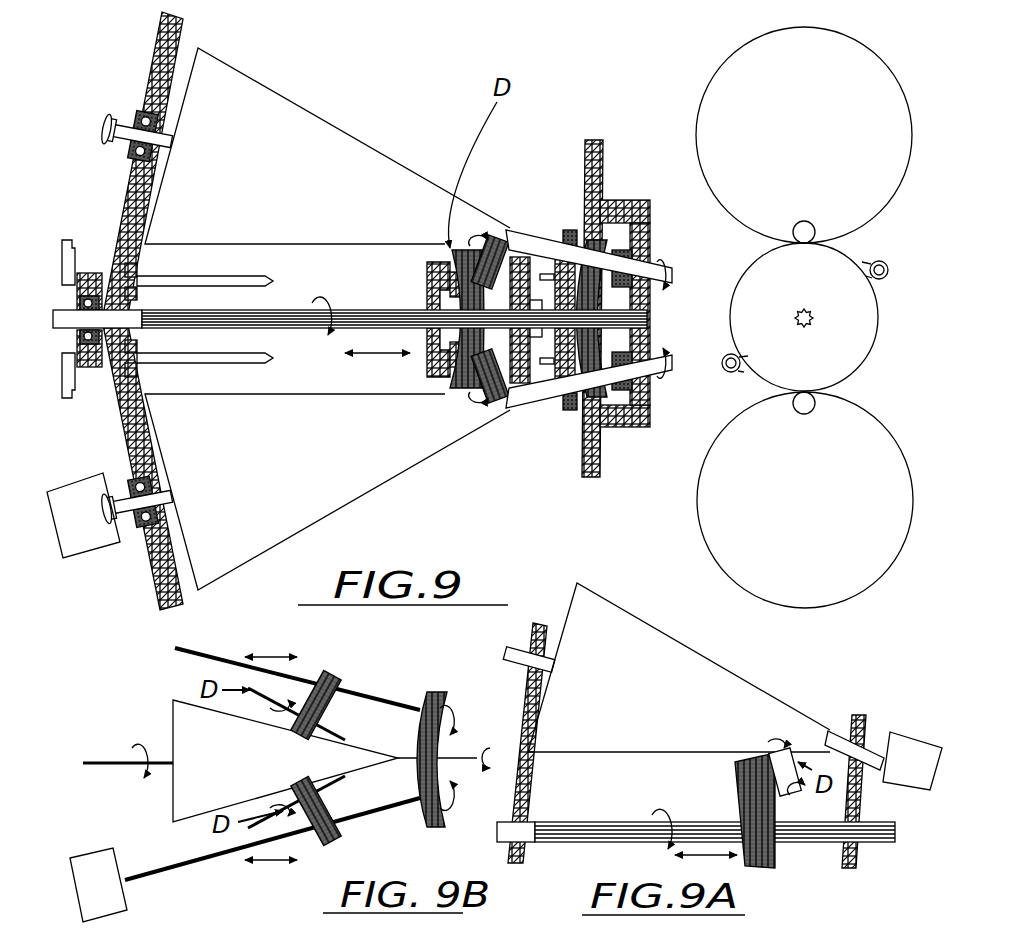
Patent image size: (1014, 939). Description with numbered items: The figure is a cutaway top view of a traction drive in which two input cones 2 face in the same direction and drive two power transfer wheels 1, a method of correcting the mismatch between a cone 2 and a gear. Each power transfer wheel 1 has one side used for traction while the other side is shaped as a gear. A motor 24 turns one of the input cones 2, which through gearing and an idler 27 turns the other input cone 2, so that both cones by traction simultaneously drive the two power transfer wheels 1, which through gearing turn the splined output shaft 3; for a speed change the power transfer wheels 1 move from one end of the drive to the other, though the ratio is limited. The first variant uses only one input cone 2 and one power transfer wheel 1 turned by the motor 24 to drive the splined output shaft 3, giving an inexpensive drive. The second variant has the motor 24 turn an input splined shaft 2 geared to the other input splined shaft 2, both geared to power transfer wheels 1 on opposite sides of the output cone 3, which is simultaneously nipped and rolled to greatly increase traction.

In FIG. 9, the power transfer wheel 1 is at (480, 235).
In FIG. 9B, the power transfer wheel 1 is at (330, 724).
In FIG. 9A, the power transfer wheel 1 is at (780, 767).
In FIG. 9, the input cone 2 is at (340, 152).
In FIG. 9B, the input cone 2 is at (355, 700).
In FIG. 9A, the input cone 2 is at (707, 711).
In FIG. 9, the splined output shaft 3 is at (388, 303).
In FIG. 9B, the splined output shaft 3 is at (204, 724).
In FIG. 9A, the splined output shaft 3 is at (600, 822).
In FIG. 9, the motor 24 is at (98, 537).
In FIG. 9B, the motor 24 is at (125, 895).
In FIG. 9A, the motor 24 is at (925, 730).
In FIG. 9, the idler 27 is at (607, 297).
In FIG. 9B, the idler 27 is at (447, 762).